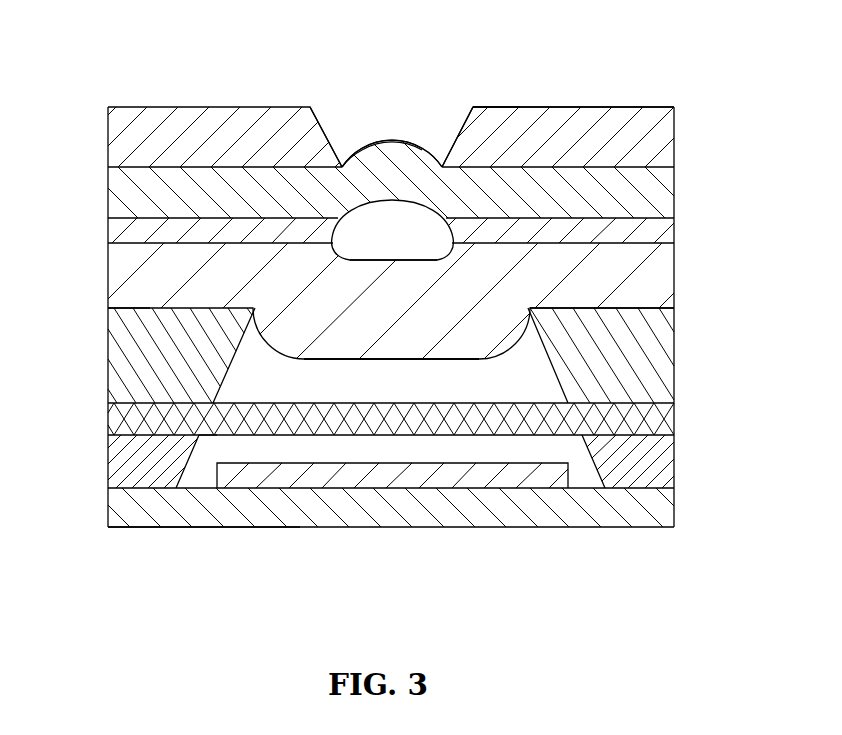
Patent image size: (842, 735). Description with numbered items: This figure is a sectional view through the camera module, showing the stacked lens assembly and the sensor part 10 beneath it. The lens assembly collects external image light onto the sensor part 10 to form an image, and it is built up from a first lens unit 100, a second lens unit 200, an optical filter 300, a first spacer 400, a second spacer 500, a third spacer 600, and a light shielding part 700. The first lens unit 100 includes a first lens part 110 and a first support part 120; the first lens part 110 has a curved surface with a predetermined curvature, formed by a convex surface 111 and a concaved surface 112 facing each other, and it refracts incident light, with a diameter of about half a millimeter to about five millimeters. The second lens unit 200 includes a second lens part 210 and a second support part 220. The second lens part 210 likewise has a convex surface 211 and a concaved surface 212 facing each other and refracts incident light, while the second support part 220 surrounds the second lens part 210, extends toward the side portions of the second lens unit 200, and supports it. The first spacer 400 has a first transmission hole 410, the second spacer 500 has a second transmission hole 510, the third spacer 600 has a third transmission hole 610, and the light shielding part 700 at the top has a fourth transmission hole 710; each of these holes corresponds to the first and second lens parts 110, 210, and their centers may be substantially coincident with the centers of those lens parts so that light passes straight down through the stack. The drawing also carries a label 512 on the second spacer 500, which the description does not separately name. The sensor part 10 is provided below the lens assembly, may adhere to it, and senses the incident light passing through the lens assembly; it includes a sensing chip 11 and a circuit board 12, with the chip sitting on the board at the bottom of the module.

The sensor part 10 is at (163, 582).
The sensing chip 11 is at (243, 491).
The circuit board 12 is at (168, 508).
The first lens unit 100 is at (667, 281).
The first lens part 110 is at (484, 343).
The convex surface 111 is at (299, 458).
The concaved surface 112 is at (499, 128).
The first support part 120 is at (586, 297).
The second lens unit 200 is at (676, 194).
The second lens part 210 is at (380, 139).
The convex surface 211 is at (352, 162).
The concaved surface 212 is at (380, 229).
The second support part 220 is at (676, 148).
The optical filter 300 is at (676, 409).
The first spacer 400 is at (666, 233).
The first transmission hole 410 is at (392, 242).
The second spacer 500 is at (676, 371).
The second transmission hole 510 is at (452, 382).
The bank upper surface 512 is at (133, 306).
The third spacer 600 is at (676, 456).
The third transmission hole 610 is at (385, 449).
The light shielding part 700 is at (631, 112).
The fourth transmission hole 710 is at (388, 126).